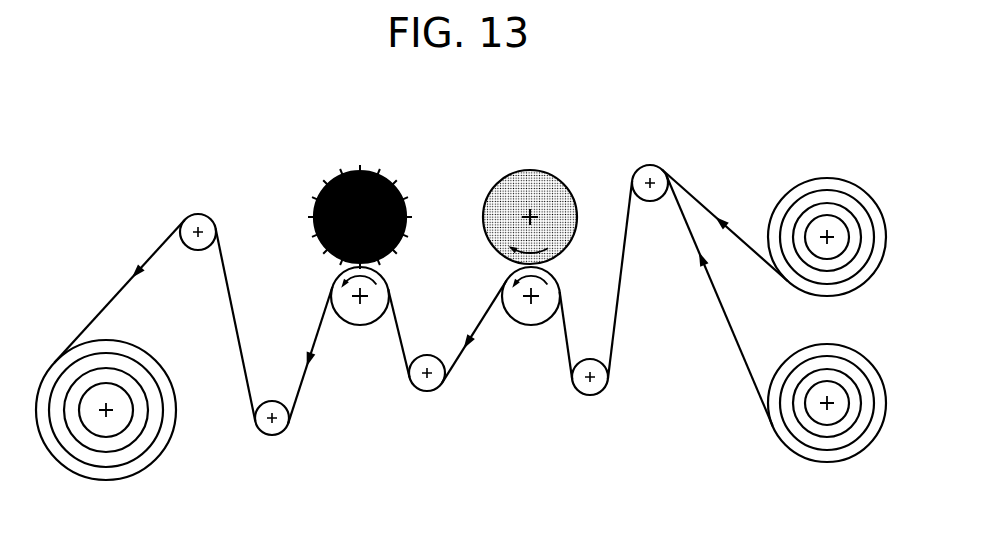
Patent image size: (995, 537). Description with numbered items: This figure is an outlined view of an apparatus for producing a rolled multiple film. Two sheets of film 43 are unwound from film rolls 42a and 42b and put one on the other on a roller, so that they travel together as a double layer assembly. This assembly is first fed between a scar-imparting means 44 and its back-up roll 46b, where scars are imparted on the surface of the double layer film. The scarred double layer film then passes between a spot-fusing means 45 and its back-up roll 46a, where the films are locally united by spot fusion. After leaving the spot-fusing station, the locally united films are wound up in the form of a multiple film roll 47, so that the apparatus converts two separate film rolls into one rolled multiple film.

The film roll 42a is at (832, 219).
The film roll 42b is at (832, 389).
The film 43 is at (421, 298).
The scar-imparting means 44 is at (530, 196).
The spot-fusing means 45 is at (360, 198).
The back-up roll 46a is at (360, 315).
The back-up roll 46b is at (531, 315).
The multiple film roll 47 is at (99, 400).